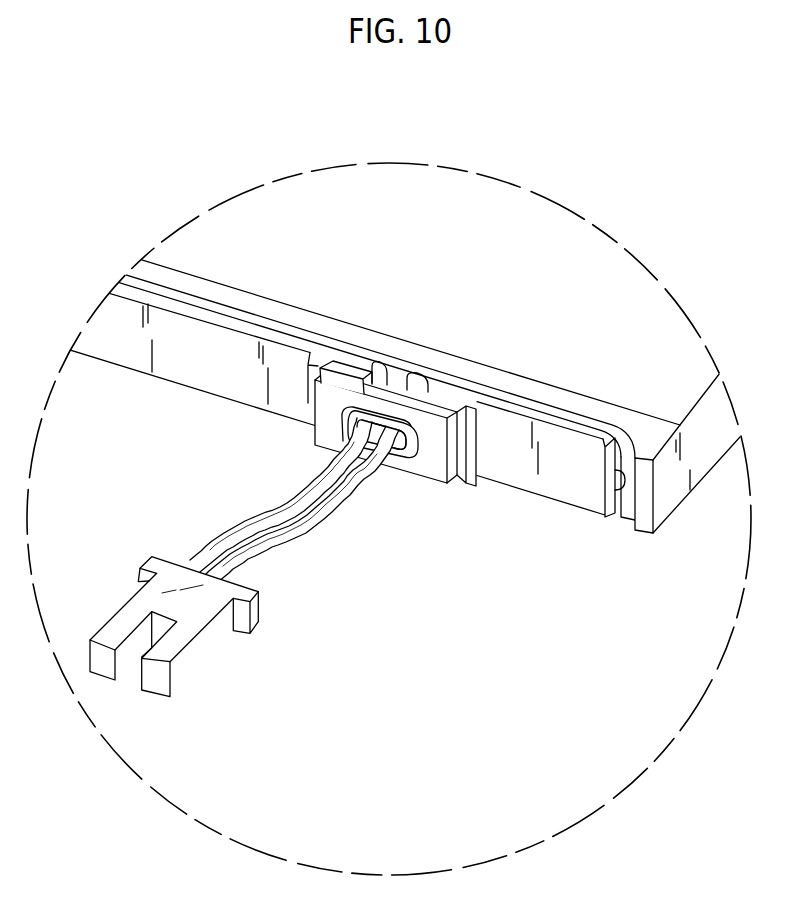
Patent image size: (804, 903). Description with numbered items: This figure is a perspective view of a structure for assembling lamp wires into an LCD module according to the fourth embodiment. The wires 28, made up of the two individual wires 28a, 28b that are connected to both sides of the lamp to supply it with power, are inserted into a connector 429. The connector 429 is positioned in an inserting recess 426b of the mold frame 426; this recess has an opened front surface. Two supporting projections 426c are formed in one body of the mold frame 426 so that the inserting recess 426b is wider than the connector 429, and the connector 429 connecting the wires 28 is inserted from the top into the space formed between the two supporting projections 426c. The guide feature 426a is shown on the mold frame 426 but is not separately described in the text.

The mold frame 426 is at (215, 384).
The guide groove 426a is at (280, 320).
The inserting recess 426b is at (426, 386).
The supporting projections 426c is at (462, 468).
The connector 429 is at (430, 468).
The wires 28 is at (407, 578).
The wire 28a is at (287, 510).
The wire 28b is at (273, 553).